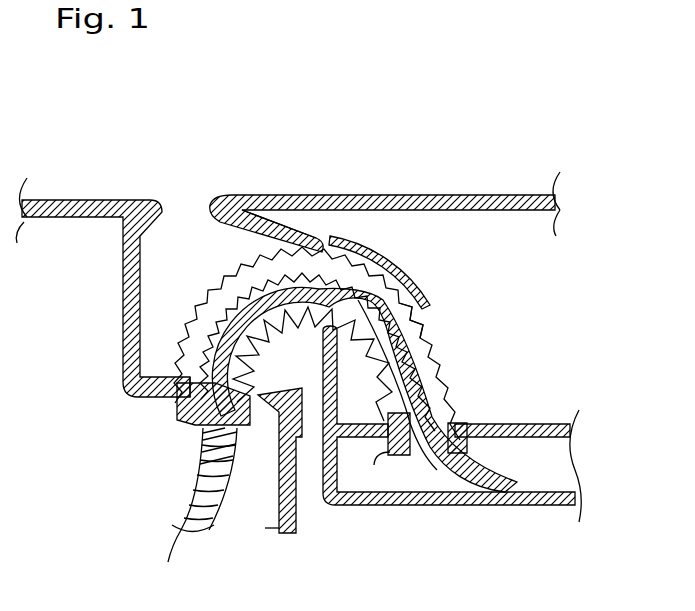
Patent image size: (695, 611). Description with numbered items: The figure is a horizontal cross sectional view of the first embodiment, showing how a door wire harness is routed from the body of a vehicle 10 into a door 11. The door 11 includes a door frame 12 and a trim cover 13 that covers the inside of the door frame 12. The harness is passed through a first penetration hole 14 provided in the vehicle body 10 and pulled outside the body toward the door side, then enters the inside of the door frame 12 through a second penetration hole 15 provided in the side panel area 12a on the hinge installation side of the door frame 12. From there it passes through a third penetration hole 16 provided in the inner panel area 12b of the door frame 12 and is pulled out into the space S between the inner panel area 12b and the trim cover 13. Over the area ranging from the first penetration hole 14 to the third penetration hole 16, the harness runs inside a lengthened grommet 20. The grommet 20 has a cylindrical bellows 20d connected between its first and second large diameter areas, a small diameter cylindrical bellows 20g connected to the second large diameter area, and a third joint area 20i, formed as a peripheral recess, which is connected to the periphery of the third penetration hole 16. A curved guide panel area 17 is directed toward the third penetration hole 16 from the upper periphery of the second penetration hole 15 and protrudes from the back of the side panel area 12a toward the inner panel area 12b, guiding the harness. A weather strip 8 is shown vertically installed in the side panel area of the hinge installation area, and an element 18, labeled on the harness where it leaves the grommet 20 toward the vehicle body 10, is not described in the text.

The weather strip 8 is at (280, 413).
The body of a vehicle 10 is at (87, 190).
The door 11 is at (452, 185).
The door frame 12 is at (402, 351).
The side panel area 12a is at (315, 245).
The inner panel area 12b is at (520, 427).
The trim cover 13 is at (513, 512).
The first penetration hole 14 is at (193, 410).
The second penetration hole 15 is at (326, 248).
The third penetration hole 16 is at (374, 465).
The curved guide panel area 17 is at (407, 278).
The tape 18 is at (200, 436).
The grommet 20 is at (340, 369).
The cylindrical bellows 20d is at (207, 333).
The small diameter cylindrical bellows 20g is at (418, 336).
The third joint area 20i is at (478, 408).
The space S is at (553, 466).